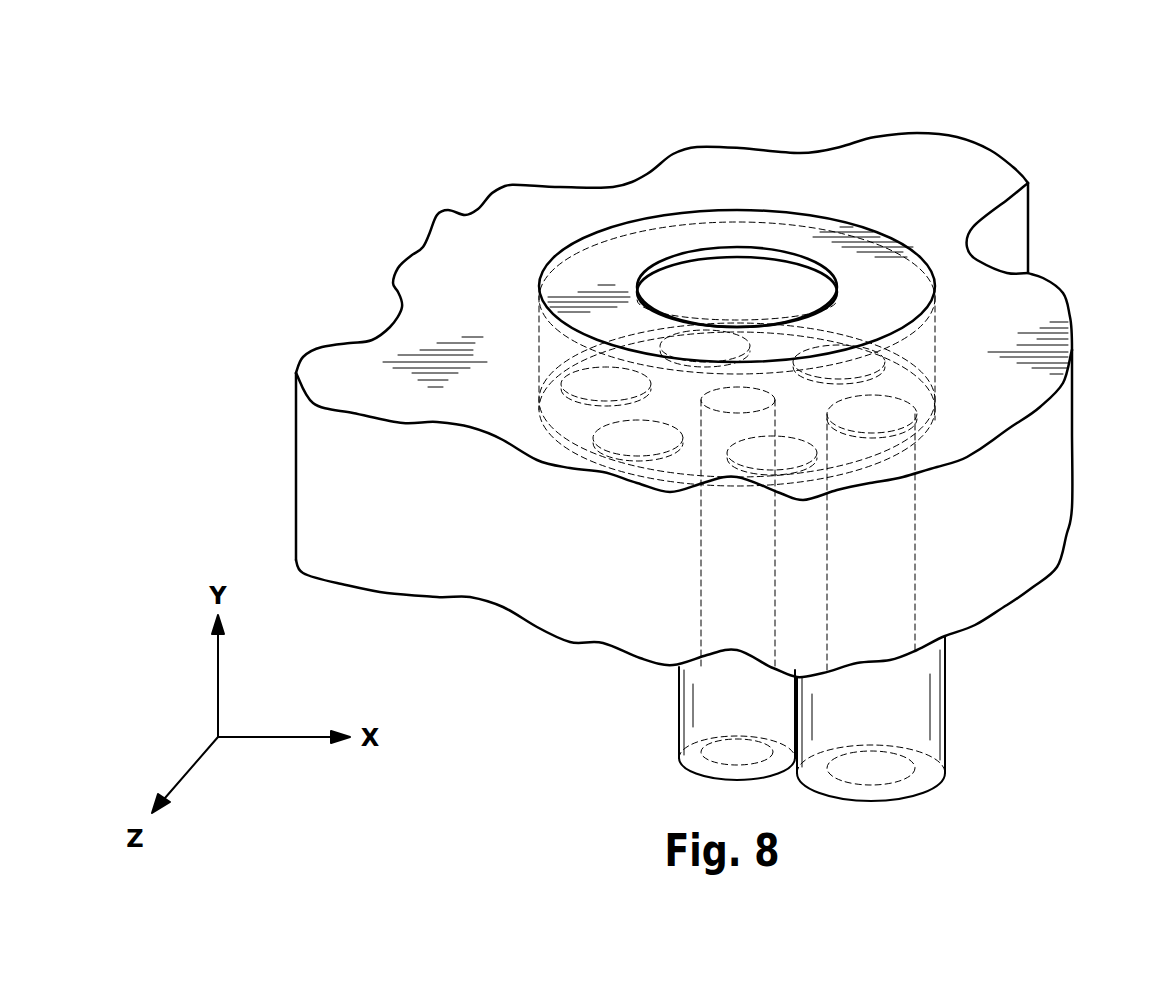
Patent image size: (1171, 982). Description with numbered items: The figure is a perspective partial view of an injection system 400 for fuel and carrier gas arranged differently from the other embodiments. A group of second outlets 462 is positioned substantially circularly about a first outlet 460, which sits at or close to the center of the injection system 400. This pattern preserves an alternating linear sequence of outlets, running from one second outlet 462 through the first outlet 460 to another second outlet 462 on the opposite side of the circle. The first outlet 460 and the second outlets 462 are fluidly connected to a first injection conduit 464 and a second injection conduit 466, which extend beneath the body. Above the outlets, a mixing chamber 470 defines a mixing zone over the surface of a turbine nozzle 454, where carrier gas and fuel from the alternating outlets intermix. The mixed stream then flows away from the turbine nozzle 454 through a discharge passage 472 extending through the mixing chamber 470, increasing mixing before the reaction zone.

The injection system 400 is at (424, 166).
The turbine nozzle 454 is at (547, 210).
The first outlet 460 is at (743, 402).
The second outlets 462 is at (704, 345).
The first injection conduit 464 is at (733, 703).
The second injection conduit 466 is at (888, 700).
The mixing chamber 470 is at (888, 263).
The discharge passage 472 is at (757, 240).